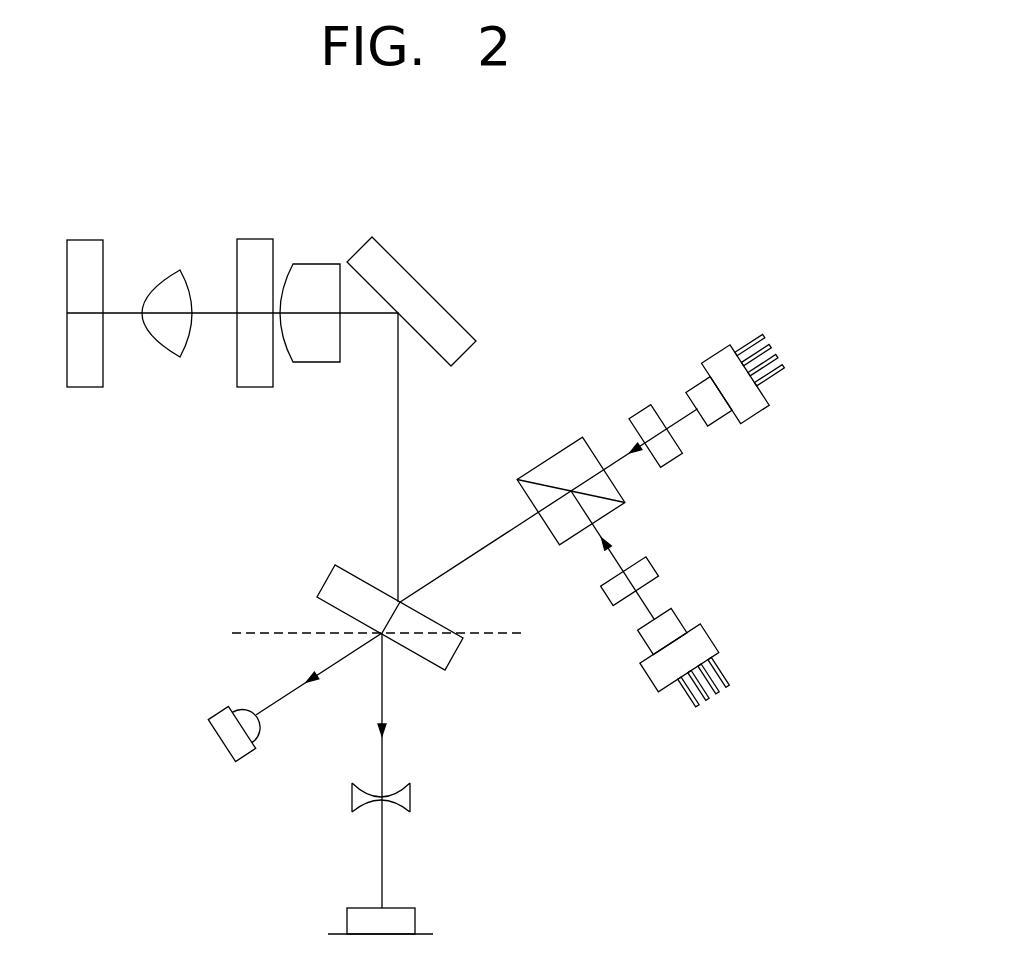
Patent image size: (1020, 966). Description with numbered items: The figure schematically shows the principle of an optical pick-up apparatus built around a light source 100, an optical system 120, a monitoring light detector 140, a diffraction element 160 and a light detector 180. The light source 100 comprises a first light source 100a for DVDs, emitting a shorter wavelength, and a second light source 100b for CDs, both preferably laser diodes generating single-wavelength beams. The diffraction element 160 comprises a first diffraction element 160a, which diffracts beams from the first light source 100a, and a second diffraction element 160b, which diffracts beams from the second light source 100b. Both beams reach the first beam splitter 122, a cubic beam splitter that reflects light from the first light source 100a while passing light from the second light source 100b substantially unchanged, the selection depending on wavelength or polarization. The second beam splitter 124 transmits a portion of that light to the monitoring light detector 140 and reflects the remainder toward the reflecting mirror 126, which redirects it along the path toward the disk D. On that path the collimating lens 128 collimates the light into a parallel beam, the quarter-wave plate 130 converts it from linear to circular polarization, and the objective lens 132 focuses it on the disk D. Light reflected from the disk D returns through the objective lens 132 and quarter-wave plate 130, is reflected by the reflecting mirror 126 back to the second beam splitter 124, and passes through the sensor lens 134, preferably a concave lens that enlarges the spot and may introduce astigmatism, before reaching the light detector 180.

The disk D is at (73, 283).
The optical system 120 is at (597, 176).
The first beam splitter 122 is at (568, 462).
The second beam splitter 124 is at (360, 575).
The reflecting mirror 126 is at (390, 265).
The collimating lens 128 is at (310, 268).
The quarter-wave plate 130 is at (250, 245).
The objective lens 132 is at (168, 284).
The sensor lens 134 is at (400, 787).
The monitoring light detector 140 is at (225, 733).
The diffraction element 160 is at (760, 462).
The first diffraction element 160a is at (645, 556).
The second diffraction element 160b is at (672, 458).
The light source 100 is at (865, 452).
The first light source 100a is at (712, 627).
The second light source 100b is at (755, 406).
The light detector 180 is at (402, 921).